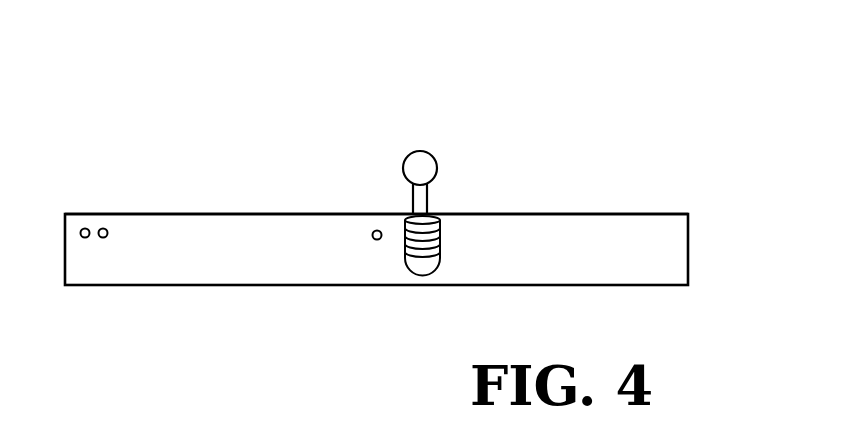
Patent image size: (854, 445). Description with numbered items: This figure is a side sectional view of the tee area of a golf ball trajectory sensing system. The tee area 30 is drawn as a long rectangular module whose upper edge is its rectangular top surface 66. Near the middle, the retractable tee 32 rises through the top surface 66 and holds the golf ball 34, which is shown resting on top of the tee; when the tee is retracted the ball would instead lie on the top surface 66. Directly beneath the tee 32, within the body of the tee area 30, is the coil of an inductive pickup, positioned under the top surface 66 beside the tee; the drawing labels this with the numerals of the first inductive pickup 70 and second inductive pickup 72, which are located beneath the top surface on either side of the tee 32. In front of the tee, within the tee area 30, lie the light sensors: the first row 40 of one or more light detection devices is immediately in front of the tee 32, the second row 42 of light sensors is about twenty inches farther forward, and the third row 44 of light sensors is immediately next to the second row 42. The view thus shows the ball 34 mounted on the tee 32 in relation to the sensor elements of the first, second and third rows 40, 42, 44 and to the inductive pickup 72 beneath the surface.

The tee area 30 is at (689, 252).
The top surface 66 is at (650, 214).
The golf ball 34 is at (433, 158).
The retractable tee 32 is at (428, 196).
The first inductive pickup 70 is at (476, 272).
The second inductive pickup 72 is at (423, 262).
The first row of light sensors 40 is at (376, 230).
The second row of light sensors 42 is at (105, 228).
The third row of light sensors 44 is at (84, 228).